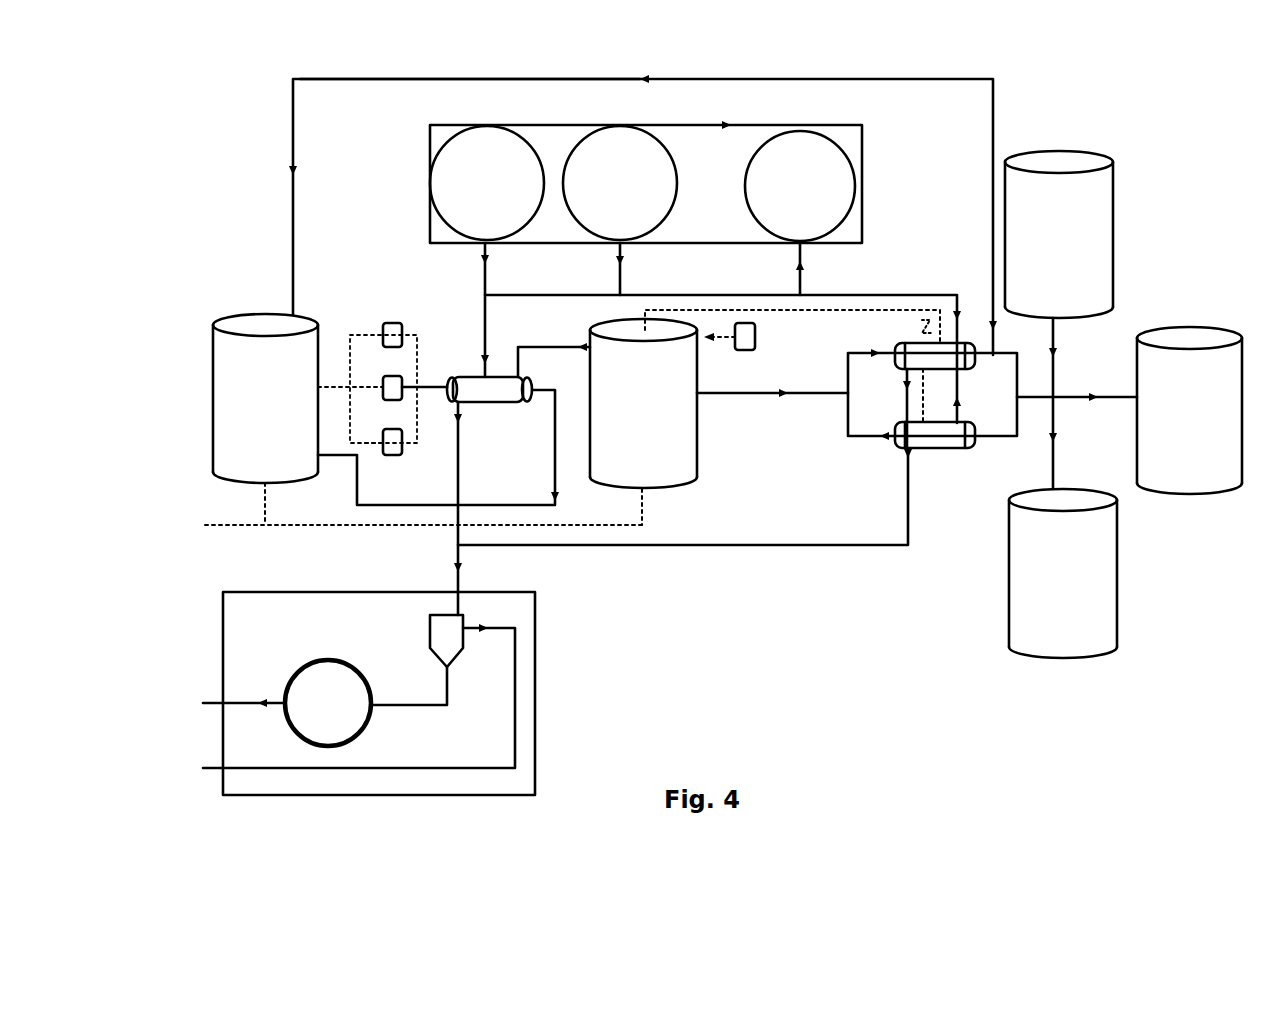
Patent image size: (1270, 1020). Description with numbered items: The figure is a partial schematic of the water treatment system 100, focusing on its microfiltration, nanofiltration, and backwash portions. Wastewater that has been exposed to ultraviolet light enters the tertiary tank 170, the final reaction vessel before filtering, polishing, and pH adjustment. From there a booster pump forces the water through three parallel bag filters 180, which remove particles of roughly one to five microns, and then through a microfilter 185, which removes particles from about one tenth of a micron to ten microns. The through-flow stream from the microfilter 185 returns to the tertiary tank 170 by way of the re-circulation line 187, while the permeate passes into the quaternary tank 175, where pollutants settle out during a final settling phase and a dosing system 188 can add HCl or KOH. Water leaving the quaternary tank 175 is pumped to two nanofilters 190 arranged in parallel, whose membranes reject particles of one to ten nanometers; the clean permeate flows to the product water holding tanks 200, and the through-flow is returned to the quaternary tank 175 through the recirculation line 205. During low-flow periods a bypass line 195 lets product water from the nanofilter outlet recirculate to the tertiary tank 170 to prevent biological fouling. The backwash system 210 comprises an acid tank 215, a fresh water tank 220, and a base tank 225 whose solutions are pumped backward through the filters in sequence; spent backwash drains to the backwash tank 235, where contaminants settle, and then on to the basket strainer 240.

The water treatment system 100 is at (238, 144).
The tertiary tank 170 is at (228, 494).
The quaternary tank 175 is at (693, 508).
The bag filters 180 is at (386, 415).
The microfilter 185 is at (510, 422).
The re-circulation line 187 is at (390, 520).
The dosing system 188 is at (745, 366).
The nanofilters 190 is at (940, 380).
The bypass line 195 is at (375, 88).
The product water holding tanks 200 is at (1090, 476).
The recirculation line 205 is at (778, 320).
The backwash system 210 is at (583, 118).
The acid tank 215 is at (487, 183).
The fresh water tank 220 is at (620, 183).
The base tank 225 is at (800, 186).
The backwash tank 235 is at (418, 620).
The basket strainer 240 is at (328, 703).